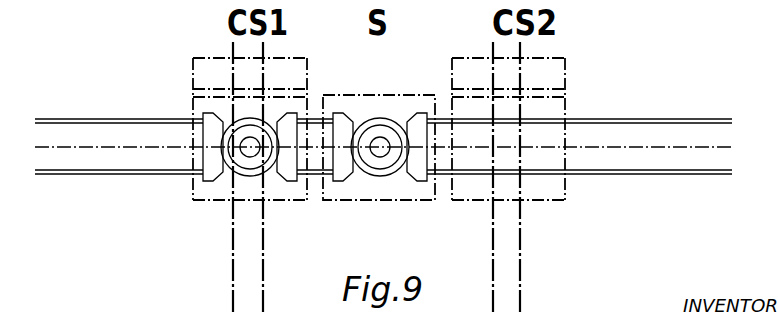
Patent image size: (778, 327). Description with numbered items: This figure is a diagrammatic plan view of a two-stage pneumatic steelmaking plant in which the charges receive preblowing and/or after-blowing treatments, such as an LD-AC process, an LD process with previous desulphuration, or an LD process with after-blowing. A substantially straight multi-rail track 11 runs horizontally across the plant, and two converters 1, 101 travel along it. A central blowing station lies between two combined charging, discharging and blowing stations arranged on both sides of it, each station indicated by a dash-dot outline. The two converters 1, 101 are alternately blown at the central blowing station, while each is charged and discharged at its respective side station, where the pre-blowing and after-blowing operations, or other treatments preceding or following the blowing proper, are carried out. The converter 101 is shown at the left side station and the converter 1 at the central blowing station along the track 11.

The multi-rail track 11 is at (112, 170).
The converter 101 is at (287, 172).
The converter 1 is at (393, 172).